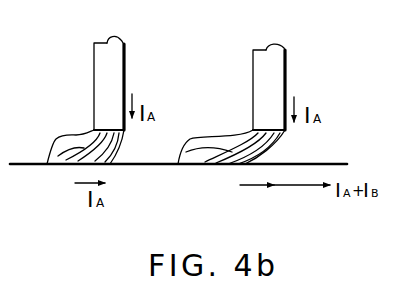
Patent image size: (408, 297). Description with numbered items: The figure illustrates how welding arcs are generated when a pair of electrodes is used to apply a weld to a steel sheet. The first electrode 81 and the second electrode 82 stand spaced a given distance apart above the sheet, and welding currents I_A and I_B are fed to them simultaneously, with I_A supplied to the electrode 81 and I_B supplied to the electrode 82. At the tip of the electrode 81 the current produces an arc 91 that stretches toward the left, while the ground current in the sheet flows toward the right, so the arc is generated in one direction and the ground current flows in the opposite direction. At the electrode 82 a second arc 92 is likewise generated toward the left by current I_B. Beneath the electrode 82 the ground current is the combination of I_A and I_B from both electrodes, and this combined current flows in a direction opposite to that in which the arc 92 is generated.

The electrode 81 is at (118, 60).
The electrode 82 is at (278, 73).
The arc 91 is at (67, 147).
The arc 92 is at (223, 147).